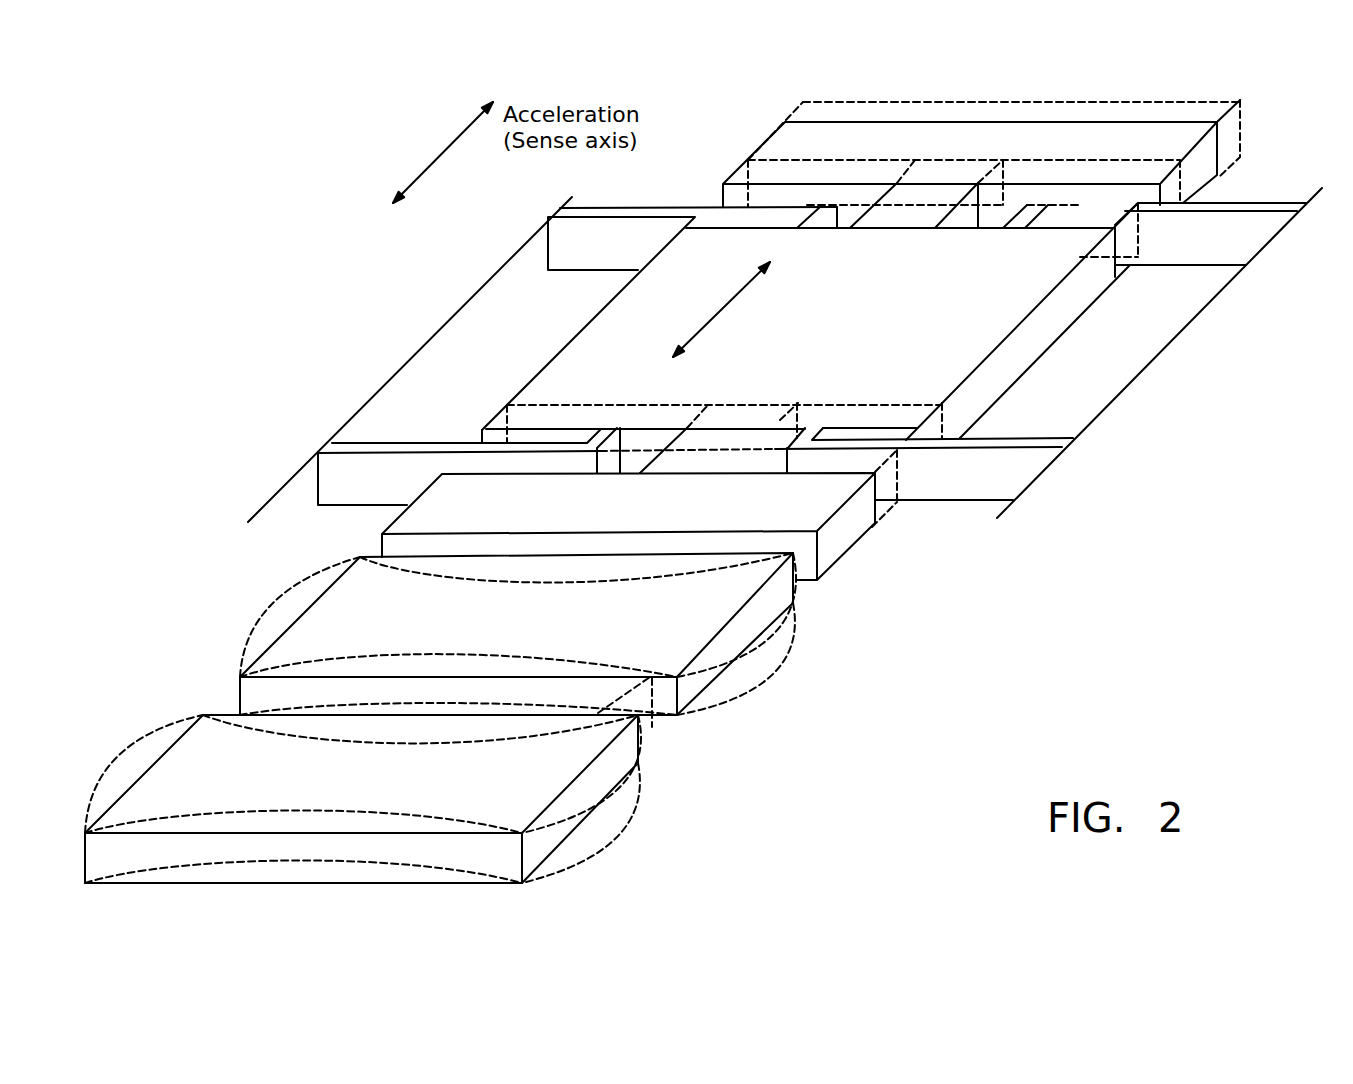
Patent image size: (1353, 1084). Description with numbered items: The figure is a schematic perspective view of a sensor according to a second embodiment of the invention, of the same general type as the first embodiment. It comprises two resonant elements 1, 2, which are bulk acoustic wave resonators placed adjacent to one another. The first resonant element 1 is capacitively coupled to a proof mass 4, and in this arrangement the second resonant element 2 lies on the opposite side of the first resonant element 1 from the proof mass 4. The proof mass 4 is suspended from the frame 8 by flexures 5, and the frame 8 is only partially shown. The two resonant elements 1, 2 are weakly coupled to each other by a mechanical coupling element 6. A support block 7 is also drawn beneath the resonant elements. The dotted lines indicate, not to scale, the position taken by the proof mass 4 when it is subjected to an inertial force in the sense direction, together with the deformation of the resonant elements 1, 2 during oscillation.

The first resonant element 1 is at (685, 622).
The second resonant element 2 is at (523, 780).
The proof mass 4 is at (957, 302).
The flexures 5 is at (1235, 240).
The mechanical coupling element 6 is at (645, 703).
The support block 7 is at (813, 578).
The frame 8 is at (392, 333).